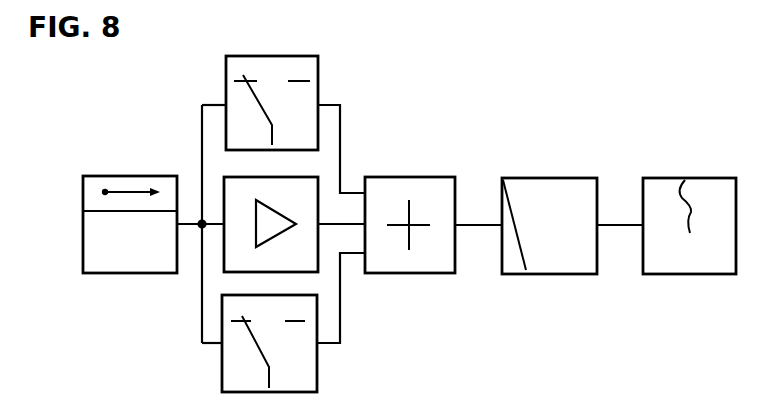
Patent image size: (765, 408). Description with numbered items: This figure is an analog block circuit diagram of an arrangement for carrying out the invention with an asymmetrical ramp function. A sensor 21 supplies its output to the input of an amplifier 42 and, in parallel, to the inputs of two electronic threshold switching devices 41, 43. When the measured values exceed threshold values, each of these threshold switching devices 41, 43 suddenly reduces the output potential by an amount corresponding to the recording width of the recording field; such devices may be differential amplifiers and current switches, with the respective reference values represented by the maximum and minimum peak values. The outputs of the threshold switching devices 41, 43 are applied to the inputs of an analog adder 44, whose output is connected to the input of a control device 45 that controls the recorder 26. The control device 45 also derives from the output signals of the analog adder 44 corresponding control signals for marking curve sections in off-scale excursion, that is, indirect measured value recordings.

The sensor 21 is at (169, 271).
The electronic threshold switching device 41 is at (318, 75).
The amplifier 42 is at (318, 263).
The electronic threshold switching device 43 is at (312, 368).
The analog adder 44 is at (447, 268).
The control device 45 is at (578, 268).
The recorder 26 is at (720, 270).